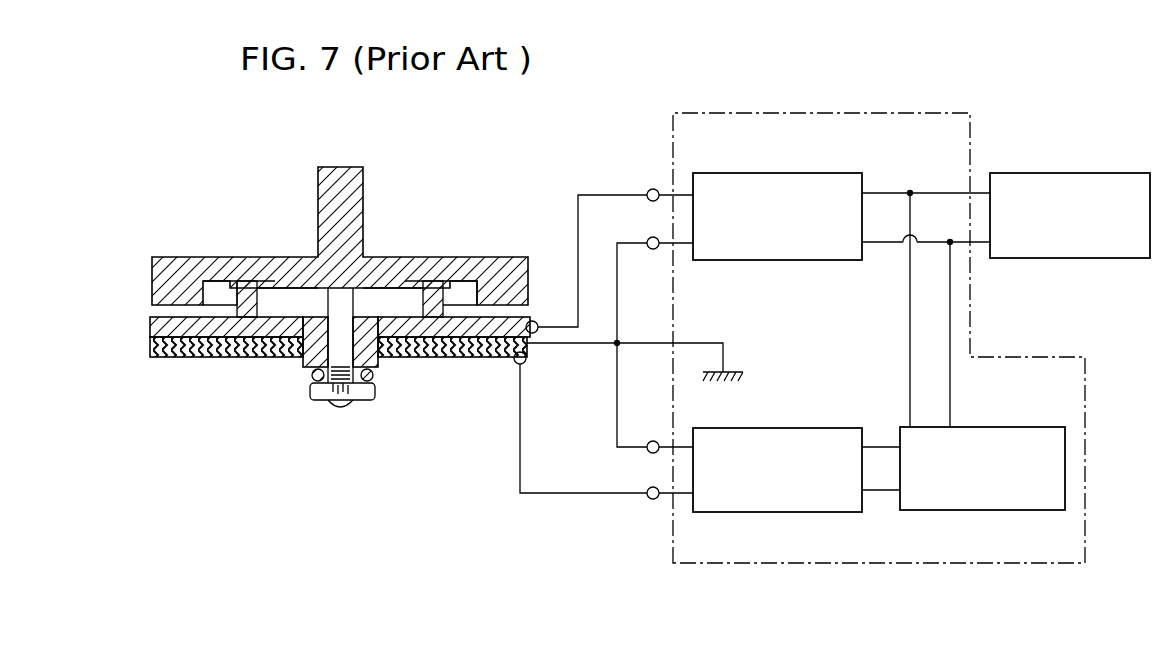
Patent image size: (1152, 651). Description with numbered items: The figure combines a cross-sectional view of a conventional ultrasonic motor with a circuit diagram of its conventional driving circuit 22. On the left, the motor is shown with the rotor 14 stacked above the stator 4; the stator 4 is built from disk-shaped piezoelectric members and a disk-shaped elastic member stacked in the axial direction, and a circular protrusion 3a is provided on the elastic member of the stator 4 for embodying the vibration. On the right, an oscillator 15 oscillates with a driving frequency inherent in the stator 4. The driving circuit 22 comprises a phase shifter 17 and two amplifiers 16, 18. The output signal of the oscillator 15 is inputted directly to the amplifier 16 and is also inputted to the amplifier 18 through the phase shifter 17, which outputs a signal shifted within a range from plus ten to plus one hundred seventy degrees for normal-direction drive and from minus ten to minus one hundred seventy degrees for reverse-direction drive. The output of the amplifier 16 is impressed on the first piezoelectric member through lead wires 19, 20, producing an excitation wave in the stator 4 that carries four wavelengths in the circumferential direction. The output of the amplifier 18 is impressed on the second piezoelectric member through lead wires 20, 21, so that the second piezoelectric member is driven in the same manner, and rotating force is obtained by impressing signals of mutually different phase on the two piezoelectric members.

The rotor 14 is at (127, 173).
The stator 4 is at (127, 317).
The circular protrusion 3a is at (258, 303).
The oscillator 15 is at (1022, 173).
The amplifier 16 is at (781, 173).
The phase shifter 17 is at (965, 510).
The amplifier 18 is at (753, 512).
The lead wire 19 is at (622, 195).
The lead wire 20 is at (586, 345).
The lead wire 21 is at (610, 493).
The driving circuit 22 is at (902, 113).